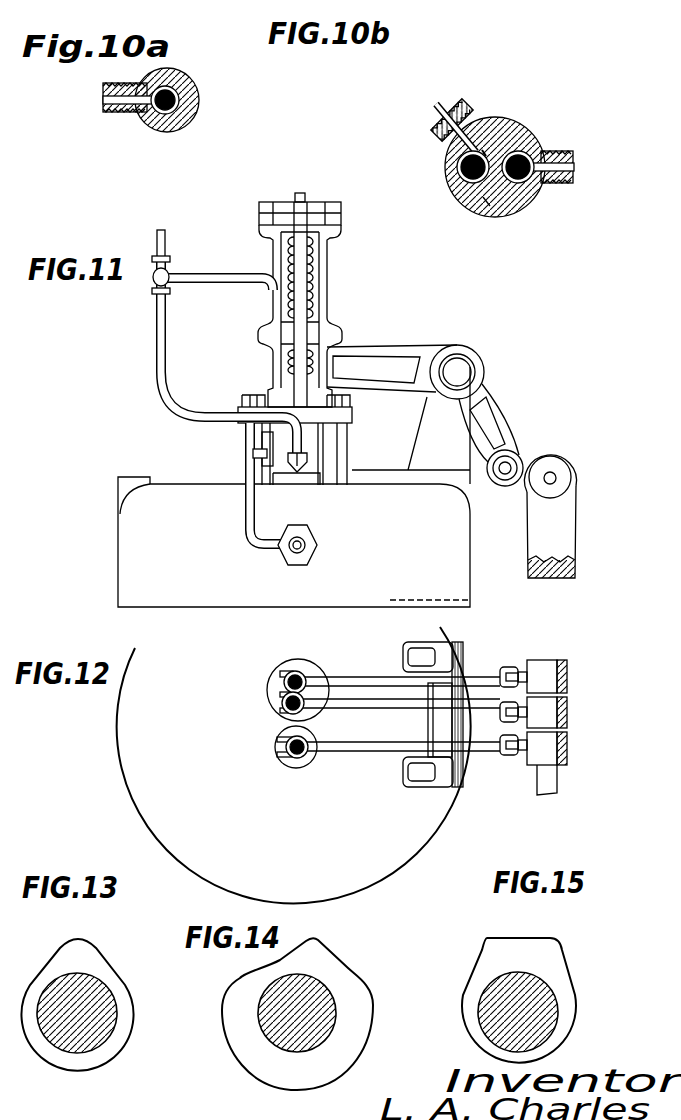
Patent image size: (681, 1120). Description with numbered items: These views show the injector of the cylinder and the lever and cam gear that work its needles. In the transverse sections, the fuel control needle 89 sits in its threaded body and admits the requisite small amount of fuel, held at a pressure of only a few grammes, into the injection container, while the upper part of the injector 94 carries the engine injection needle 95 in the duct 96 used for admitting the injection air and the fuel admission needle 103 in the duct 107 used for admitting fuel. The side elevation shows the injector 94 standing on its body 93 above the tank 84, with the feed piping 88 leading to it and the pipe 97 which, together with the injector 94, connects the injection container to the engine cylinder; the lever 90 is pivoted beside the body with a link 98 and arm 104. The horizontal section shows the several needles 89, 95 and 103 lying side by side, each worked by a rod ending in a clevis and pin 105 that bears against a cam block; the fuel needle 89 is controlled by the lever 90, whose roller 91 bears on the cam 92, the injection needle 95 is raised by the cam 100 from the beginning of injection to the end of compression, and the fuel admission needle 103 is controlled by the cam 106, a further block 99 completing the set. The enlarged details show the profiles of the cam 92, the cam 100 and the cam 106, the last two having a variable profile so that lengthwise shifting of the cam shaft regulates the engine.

In FIG. 11, the reservoir tank 84 is at (131, 543).
In FIG. 10A, the supply pipe 88 is at (103, 97).
In FIG. 10B, the supply pipe 88 is at (570, 170).
In FIG. 11, the supply pipe 88 is at (162, 395).
In FIG. 10A, the needle 89 is at (142, 118).
In FIG. 12, the needle 89 is at (283, 762).
In FIG. 11, the lever 90 is at (348, 367).
In FIG. 12, the lever 90 is at (343, 750).
In FIG. 12, the roller 91 is at (527, 748).
In FIG. 12, the cam 92 is at (567, 750).
In FIG. 13, the cam 92 is at (78, 966).
In FIG. 11, the valve body 93 is at (313, 280).
In FIG. 10B, the injector 94 is at (483, 197).
In FIG. 11, the injector 94 is at (263, 210).
In FIG. 12, the injector 94 is at (275, 673).
In FIG. 10B, the engine injection needle 95 is at (462, 167).
In FIG. 12, the engine injection needle 95 is at (282, 712).
In FIG. 10B, the duct 96 is at (483, 152).
In FIG. 10B, the pipe 97 is at (440, 103).
In FIG. 11, the pipe 97 is at (257, 547).
In FIG. 11, the connecting link 98 is at (402, 348).
In FIG. 12, the connecting link 98 is at (375, 703).
In FIG. 12, the block 99 is at (530, 708).
In FIG. 12, the cam 100 is at (557, 717).
In FIG. 14, the cam 100 is at (337, 970).
In FIG. 10B, the needle 103 is at (520, 172).
In FIG. 12, the needle 103 is at (283, 685).
In FIG. 11, the link arm 104 is at (510, 311).
In FIG. 12, the link arm 104 is at (356, 682).
In FIG. 12, the pin 105 is at (515, 675).
In FIG. 12, the cam 106 is at (567, 670).
In FIG. 15, the cam 106 is at (588, 955).
In FIG. 10B, the duct 107 is at (530, 127).